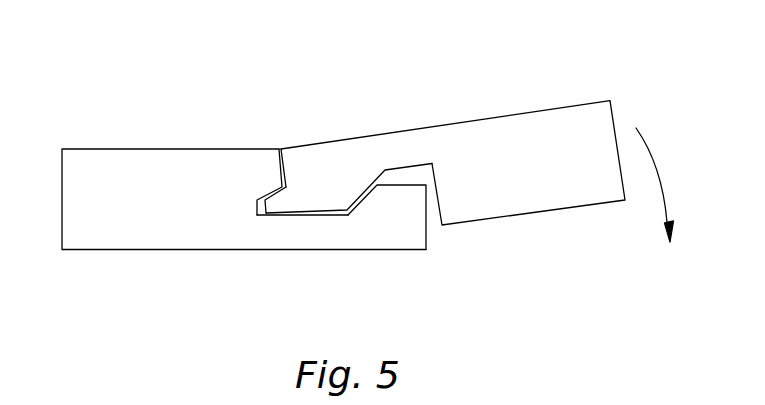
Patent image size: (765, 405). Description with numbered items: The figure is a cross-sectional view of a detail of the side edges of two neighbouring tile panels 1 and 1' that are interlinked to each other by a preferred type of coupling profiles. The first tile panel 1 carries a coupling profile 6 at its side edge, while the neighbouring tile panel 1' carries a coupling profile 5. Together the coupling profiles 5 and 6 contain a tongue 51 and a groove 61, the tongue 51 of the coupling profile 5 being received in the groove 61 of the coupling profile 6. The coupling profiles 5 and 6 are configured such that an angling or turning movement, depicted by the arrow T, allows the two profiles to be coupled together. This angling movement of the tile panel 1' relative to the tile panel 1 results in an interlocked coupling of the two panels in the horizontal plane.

The tile panel 1 is at (244, 158).
The tile panel 1' is at (453, 125).
The coupling profile 5 is at (342, 157).
The tongue 51 is at (302, 195).
The coupling profile 6 is at (393, 227).
The groove 61 is at (257, 211).
The arrow T is at (663, 182).